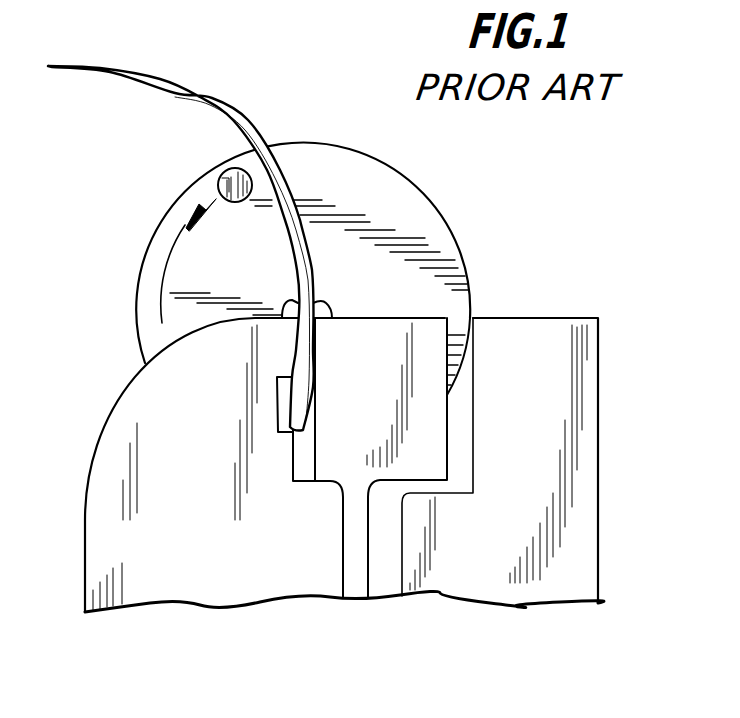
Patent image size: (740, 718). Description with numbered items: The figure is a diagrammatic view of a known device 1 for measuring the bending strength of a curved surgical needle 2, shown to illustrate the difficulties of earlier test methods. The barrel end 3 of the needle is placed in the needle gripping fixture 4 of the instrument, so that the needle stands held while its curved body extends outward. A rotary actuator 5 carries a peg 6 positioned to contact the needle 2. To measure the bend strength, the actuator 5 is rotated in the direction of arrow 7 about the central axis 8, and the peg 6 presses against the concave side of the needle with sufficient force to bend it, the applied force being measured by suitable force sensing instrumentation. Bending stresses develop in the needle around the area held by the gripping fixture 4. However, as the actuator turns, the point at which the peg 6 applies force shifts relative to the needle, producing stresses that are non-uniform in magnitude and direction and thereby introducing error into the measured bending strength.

The known device 1 is at (95, 319).
The curved surgical needle 2 is at (176, 85).
The barrel end 3 is at (293, 408).
The needle gripping fixture 4 is at (100, 432).
The rotary actuator 5 is at (465, 270).
The peg 6 is at (219, 178).
The arrow 7 is at (170, 263).
The central axis 8 is at (323, 305).